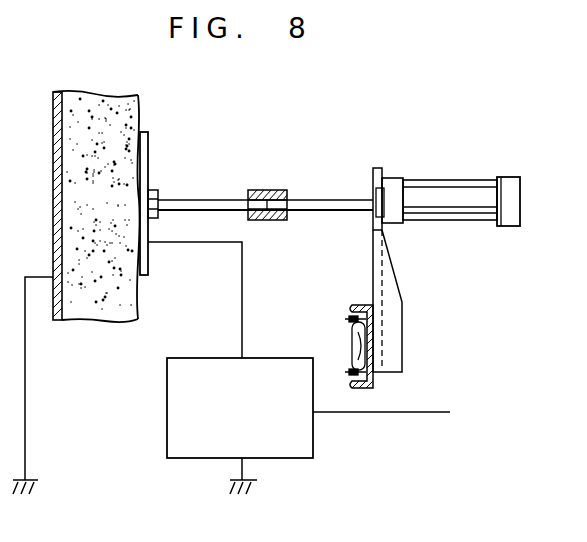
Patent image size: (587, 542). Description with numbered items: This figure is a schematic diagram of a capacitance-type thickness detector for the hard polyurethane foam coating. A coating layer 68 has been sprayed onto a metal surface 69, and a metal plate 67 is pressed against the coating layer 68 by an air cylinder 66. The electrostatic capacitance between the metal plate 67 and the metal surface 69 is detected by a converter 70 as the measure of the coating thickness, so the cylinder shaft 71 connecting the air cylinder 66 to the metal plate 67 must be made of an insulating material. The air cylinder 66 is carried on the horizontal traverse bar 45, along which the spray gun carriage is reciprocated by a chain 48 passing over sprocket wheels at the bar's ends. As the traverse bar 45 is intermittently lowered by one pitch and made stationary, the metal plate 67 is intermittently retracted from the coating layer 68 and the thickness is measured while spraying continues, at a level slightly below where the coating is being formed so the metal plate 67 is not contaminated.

The traverse bar 45 is at (368, 306).
The chain 48 is at (345, 320).
The air cylinder 66 is at (457, 190).
The metal plate 67 is at (149, 141).
The coating layer 68 is at (106, 313).
The metal surface 69 is at (57, 319).
The converter 70 is at (167, 412).
The cylinder shaft 71 is at (333, 199).